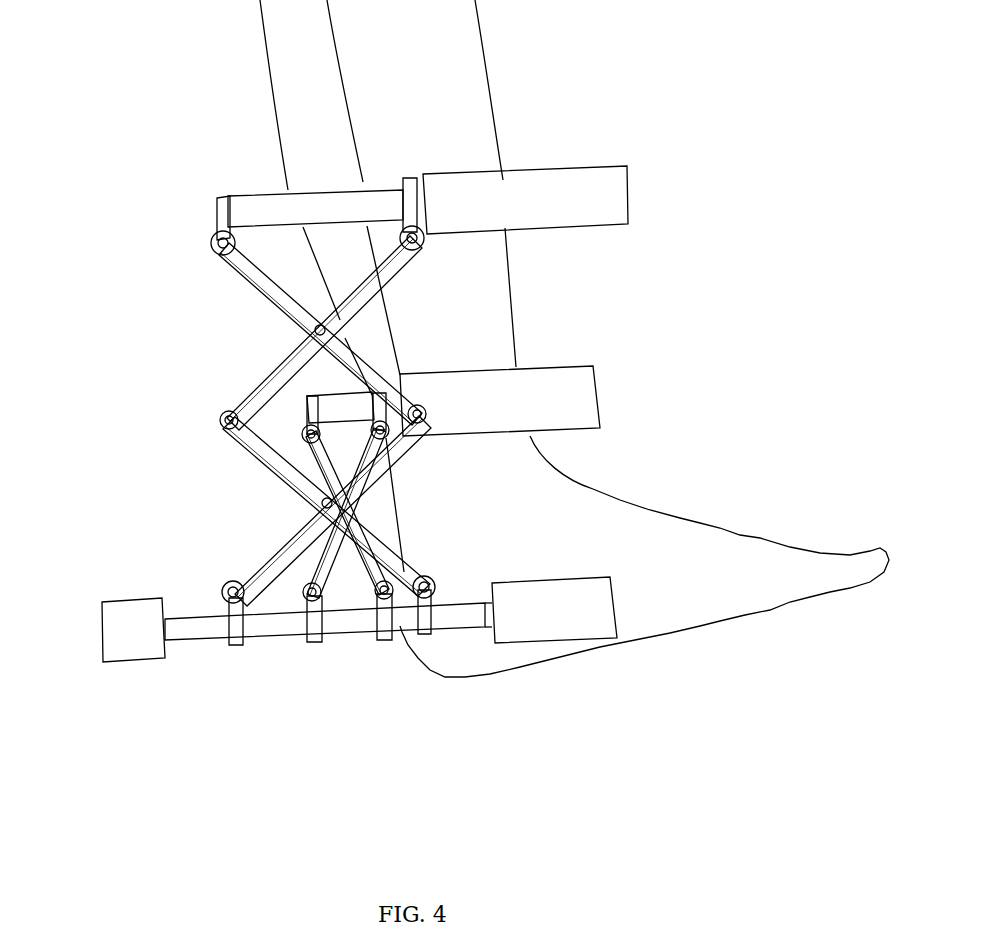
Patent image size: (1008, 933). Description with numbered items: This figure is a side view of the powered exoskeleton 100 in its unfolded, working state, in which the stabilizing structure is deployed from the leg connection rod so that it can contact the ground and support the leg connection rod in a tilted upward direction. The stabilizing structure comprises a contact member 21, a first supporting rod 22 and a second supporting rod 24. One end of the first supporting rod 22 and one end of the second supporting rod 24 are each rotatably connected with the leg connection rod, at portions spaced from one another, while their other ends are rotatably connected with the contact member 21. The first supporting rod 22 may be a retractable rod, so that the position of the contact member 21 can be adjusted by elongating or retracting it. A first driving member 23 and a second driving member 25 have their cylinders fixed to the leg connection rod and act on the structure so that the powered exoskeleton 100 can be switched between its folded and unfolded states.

The powered exoskeleton 100 is at (168, 447).
The contact member 21 is at (578, 622).
The first supporting rod 22 is at (252, 304).
The first driving member 23 is at (598, 183).
The second supporting rod 24 is at (328, 578).
The second driving member 25 is at (575, 390).